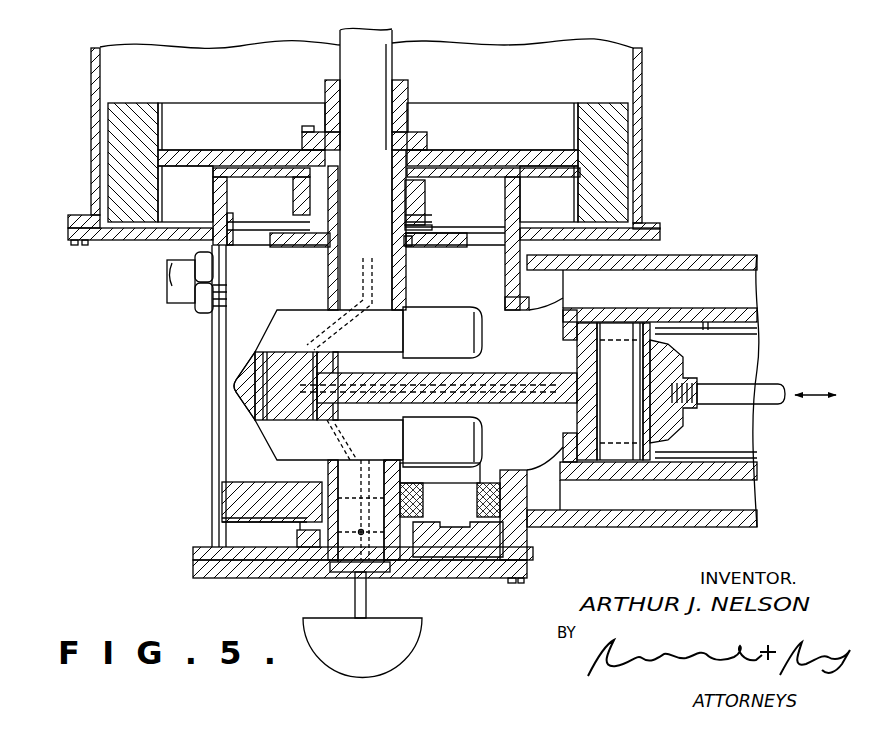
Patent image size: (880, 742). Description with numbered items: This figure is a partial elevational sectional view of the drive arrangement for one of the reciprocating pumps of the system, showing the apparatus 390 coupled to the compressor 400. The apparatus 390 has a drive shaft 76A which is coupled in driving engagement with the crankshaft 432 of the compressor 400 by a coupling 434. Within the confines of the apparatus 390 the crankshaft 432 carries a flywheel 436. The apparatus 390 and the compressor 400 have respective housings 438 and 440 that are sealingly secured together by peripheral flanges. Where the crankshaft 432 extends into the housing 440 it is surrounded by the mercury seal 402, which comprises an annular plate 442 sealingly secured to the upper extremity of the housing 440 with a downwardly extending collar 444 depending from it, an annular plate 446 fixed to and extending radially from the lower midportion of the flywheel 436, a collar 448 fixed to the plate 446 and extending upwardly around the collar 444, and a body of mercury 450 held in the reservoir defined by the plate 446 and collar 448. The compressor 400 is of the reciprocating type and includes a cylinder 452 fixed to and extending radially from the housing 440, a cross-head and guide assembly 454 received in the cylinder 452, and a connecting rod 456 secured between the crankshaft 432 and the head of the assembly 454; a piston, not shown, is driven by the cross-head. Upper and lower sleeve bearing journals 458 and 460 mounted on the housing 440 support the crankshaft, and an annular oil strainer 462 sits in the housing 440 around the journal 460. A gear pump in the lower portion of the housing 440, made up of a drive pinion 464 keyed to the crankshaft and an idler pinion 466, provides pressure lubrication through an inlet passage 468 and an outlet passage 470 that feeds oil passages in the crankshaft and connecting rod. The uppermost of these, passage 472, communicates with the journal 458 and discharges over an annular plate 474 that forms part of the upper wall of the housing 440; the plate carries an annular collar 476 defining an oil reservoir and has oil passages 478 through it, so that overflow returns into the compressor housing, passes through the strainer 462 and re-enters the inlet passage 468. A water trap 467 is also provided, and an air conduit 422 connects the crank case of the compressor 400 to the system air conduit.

The drive shaft 76A is at (393, 38).
The apparatus 390 is at (90, 70).
The housing 438 is at (91, 188).
The coupling 434 is at (341, 146).
The crankshaft 432 is at (397, 163).
The mercury seal 402 is at (460, 166).
The annular plate 442 is at (491, 176).
The flywheel 436 is at (617, 151).
The body of mercury 450 is at (300, 199).
The collar 444 is at (431, 197).
The collar 448 is at (434, 215).
The oil passages 478 is at (229, 222).
The annular collar 476 is at (269, 226).
The annular plate 474 is at (256, 244).
The oil passage 472 is at (380, 267).
The annular plate 446 is at (411, 244).
The upper sleeve bearing journal 458 is at (327, 273).
The air conduit 422 is at (184, 301).
The housing 440 is at (211, 387).
The compressor 400 is at (343, 393).
The cross-head and guide assembly 454 is at (679, 310).
The connecting rod 456 is at (497, 399).
The oil strainer 462 is at (271, 485).
The lower sleeve bearing journal 460 is at (402, 476).
The outlet passage 470 is at (413, 525).
The inlet passage 468 is at (299, 536).
The drive pinion 464 is at (399, 566).
The idler pinion 466 is at (457, 566).
The water trap 467 is at (410, 652).
The cylinder 452 is at (662, 529).